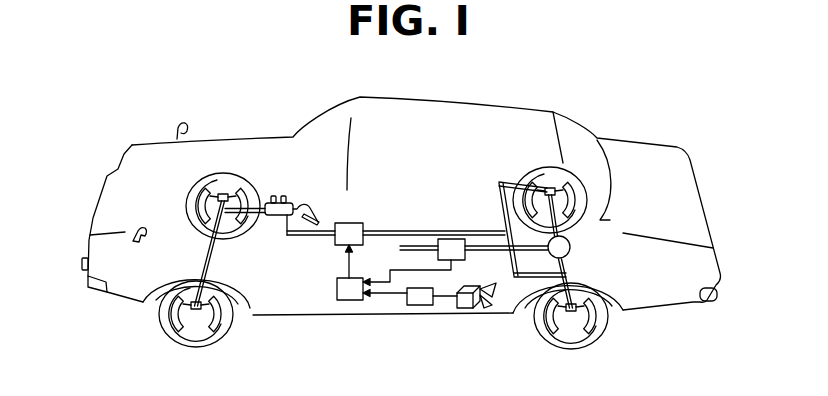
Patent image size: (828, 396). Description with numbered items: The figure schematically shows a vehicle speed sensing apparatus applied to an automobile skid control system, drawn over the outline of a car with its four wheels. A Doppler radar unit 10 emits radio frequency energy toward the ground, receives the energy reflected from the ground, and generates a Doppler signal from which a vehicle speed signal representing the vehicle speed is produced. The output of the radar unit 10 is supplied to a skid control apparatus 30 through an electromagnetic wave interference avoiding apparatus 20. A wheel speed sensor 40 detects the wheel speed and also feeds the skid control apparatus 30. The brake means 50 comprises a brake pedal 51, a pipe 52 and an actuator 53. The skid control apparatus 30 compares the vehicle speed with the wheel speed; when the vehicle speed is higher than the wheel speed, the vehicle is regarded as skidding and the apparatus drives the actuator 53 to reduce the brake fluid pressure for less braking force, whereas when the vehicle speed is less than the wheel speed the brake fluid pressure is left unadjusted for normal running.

The Doppler radar unit 10 is at (464, 308).
The electromagnetic wave interference avoiding apparatus 20 is at (420, 305).
The skid control apparatus 30 is at (337, 289).
The wheel speed sensor 40 is at (462, 240).
The brake means 50 is at (318, 187).
The brake pedal 51 is at (314, 216).
The pipe 52 is at (425, 231).
The actuator 53 is at (358, 226).